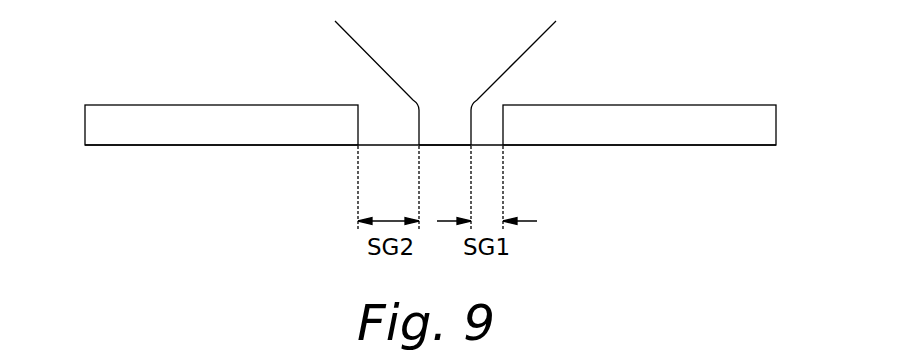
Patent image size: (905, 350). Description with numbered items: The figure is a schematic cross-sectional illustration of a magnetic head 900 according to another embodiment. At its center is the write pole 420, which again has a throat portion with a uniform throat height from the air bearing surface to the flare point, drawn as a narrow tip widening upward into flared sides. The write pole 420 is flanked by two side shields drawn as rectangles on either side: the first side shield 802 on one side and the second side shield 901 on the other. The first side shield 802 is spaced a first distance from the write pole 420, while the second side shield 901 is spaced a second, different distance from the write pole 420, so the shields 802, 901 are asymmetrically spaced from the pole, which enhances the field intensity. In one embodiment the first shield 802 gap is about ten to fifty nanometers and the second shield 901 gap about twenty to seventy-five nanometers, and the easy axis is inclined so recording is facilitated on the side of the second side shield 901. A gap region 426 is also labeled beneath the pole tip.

The magnetic head 900 is at (172, 52).
The second side shield 901 is at (95, 123).
The first side shield 802 is at (765, 123).
The write pole 420 is at (466, 79).
The gap 426 is at (444, 145).